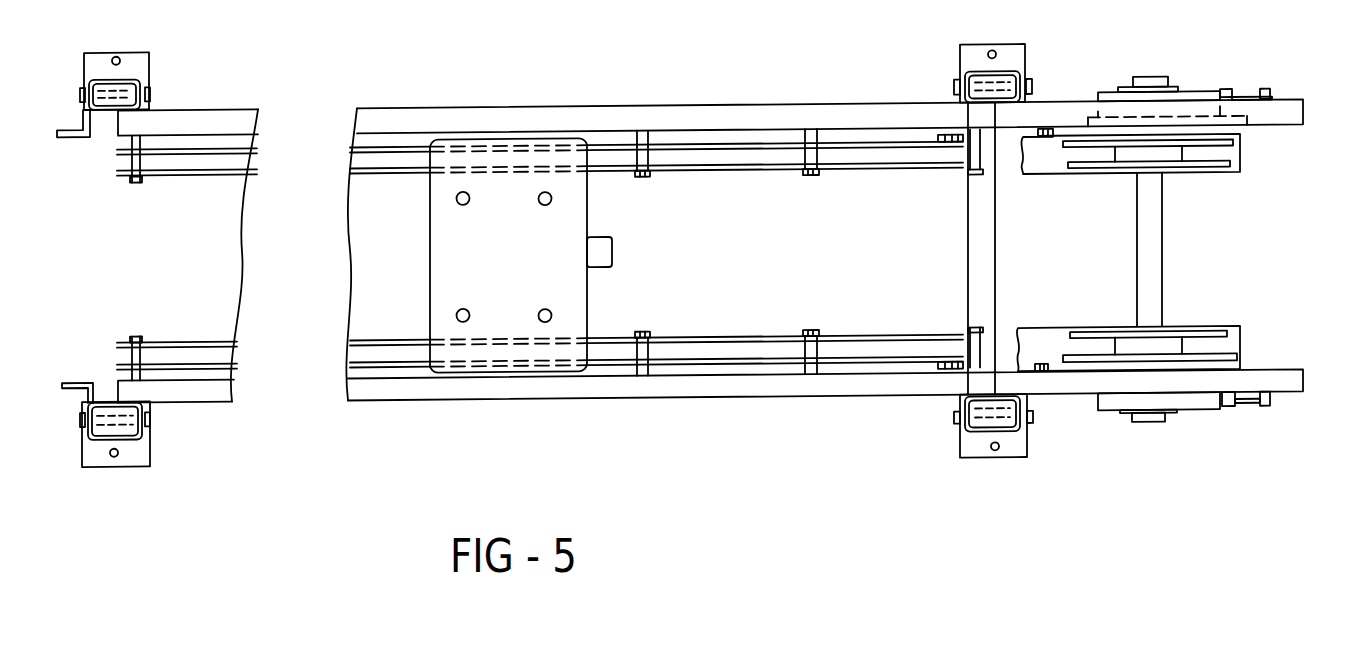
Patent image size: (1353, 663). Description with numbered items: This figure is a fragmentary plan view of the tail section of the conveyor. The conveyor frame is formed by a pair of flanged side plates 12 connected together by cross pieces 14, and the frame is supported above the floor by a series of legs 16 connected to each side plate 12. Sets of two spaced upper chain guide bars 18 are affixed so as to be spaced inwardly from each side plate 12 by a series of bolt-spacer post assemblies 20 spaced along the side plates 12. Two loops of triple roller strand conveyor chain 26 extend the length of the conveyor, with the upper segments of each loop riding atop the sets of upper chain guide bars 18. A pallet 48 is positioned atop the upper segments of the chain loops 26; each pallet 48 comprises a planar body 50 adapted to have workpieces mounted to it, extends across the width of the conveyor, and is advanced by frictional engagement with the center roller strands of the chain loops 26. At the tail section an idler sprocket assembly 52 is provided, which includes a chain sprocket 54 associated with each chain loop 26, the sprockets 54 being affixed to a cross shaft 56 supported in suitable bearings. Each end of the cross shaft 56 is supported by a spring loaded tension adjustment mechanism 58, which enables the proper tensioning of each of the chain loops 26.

The flanged side plate 12 is at (773, 402).
The cross piece 14 is at (968, 213).
The leg 16 is at (961, 445).
The upper chain guide bar 18 is at (718, 158).
The bolt-spacer post assembly 20 is at (640, 180).
The triple roller strand conveyor chain loop 26 is at (1052, 180).
The pallet 48 is at (583, 309).
The planar body 50 is at (530, 268).
The idler sprocket assembly 52 is at (1197, 254).
The chain sprocket 54 is at (1223, 157).
The cross shaft 56 is at (1165, 247).
The spring loaded tension adjustment mechanism 58 is at (1184, 97).